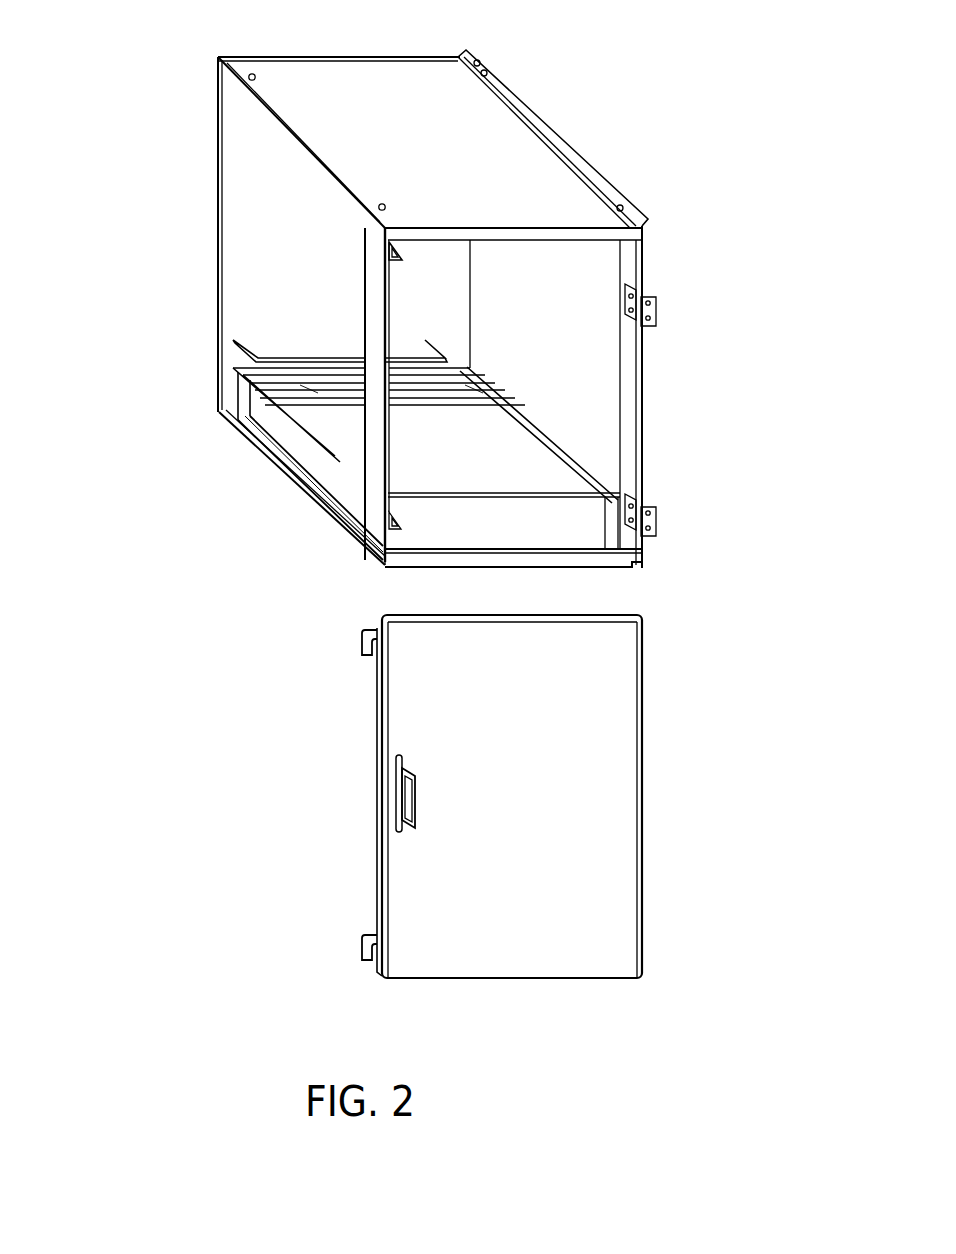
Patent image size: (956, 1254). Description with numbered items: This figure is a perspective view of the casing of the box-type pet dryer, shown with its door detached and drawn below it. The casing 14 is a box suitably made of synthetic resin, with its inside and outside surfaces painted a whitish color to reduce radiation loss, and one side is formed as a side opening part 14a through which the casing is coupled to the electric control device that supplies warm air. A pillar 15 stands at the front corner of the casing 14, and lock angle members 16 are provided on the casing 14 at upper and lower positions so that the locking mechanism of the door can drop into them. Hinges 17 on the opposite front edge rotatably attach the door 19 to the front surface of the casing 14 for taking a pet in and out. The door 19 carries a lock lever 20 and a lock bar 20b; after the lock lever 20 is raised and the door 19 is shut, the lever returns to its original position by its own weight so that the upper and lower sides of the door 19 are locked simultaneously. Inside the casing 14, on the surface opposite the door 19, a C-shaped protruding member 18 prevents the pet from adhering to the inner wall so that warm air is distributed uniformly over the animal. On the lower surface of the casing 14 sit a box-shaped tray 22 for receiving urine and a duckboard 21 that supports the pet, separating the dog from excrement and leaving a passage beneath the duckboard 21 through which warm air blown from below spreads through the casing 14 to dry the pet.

The casing 14 is at (555, 130).
The side opening part 14a is at (650, 150).
The pillar 15 is at (370, 232).
The lock angle member 16 is at (395, 255).
The hinge 17 is at (656, 309).
The protruding member 18 is at (242, 362).
The door 19 is at (642, 754).
The lock lever 20 is at (396, 800).
The lock bar 20b is at (362, 640).
The duckboard 21 is at (310, 385).
The tray 22 is at (288, 460).